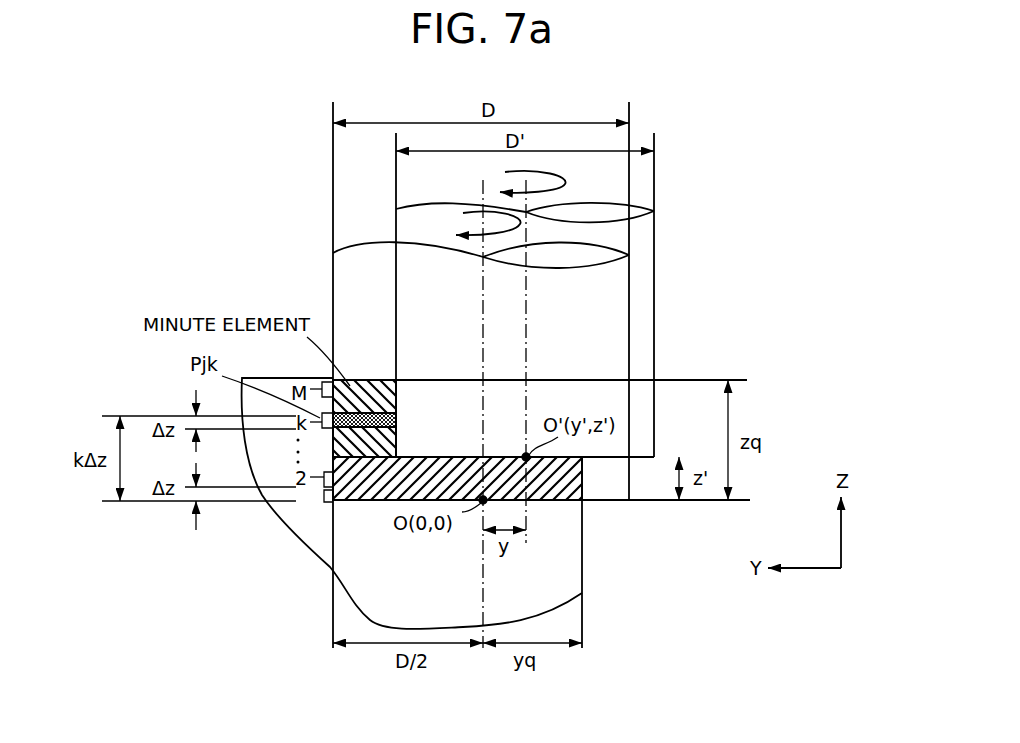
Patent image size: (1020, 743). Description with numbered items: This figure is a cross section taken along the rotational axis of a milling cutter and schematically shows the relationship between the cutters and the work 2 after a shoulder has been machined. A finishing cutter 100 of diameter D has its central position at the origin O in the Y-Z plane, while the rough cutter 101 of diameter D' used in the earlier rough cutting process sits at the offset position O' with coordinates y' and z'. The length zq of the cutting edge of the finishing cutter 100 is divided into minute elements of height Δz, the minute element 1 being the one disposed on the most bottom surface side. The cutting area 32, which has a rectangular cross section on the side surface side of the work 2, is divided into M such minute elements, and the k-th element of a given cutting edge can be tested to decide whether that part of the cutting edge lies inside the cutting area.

The work 2 is at (555, 556).
The cutting area 32 is at (377, 384).
The finishing cutter 100 is at (592, 318).
The rough cutter 101 is at (645, 242).
The minute element 1 is at (324, 496).